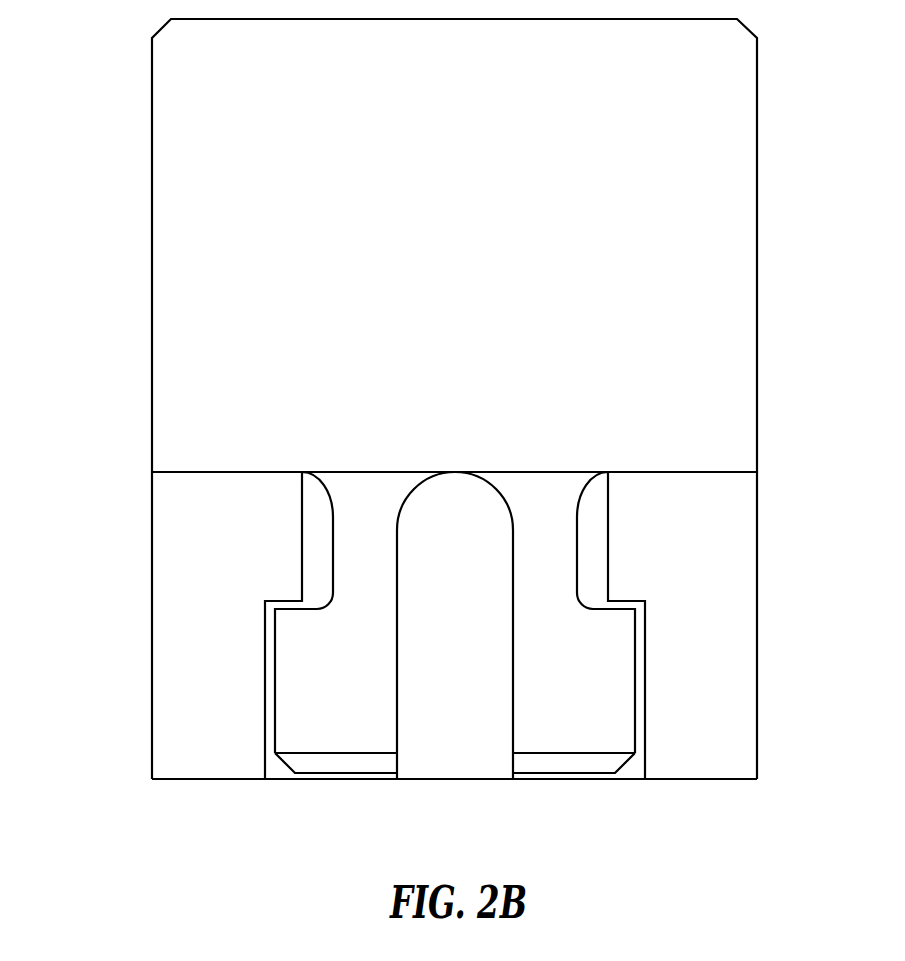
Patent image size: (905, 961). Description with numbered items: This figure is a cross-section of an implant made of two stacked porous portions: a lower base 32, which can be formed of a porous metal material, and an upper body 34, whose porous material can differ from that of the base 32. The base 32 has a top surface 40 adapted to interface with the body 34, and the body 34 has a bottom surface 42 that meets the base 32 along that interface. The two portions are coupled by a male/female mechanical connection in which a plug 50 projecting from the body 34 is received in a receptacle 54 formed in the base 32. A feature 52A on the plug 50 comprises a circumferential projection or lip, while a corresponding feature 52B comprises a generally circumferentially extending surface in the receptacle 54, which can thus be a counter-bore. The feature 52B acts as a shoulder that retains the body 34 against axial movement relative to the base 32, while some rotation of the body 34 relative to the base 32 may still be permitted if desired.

The body 34 is at (113, 145).
The base 32 is at (113, 567).
The top surface 40 is at (737, 472).
The bottom surface 42 is at (172, 472).
The plug 50 is at (570, 733).
The feature 52A is at (615, 609).
The feature 52B is at (283, 609).
The receptacle 54 is at (432, 804).